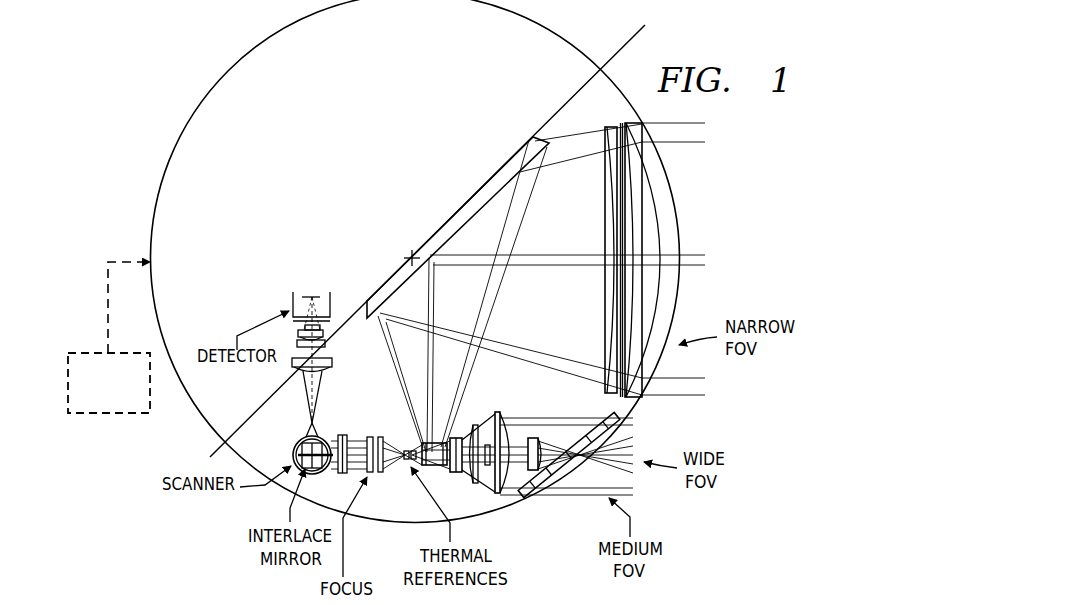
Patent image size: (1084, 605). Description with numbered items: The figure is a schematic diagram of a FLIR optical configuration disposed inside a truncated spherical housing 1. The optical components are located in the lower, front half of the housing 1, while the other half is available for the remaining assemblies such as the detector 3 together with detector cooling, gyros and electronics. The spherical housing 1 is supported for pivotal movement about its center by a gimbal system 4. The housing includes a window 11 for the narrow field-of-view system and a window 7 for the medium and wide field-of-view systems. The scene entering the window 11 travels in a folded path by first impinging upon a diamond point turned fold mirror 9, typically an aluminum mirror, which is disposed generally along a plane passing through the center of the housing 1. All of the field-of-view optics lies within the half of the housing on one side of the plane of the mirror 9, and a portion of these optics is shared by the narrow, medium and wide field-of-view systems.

The spherical housing 1 is at (215, 90).
The detector 3 is at (293, 300).
The gimbal system 4 is at (108, 414).
The window 7 is at (556, 478).
The fold mirror 9 is at (447, 222).
The window 11 is at (673, 205).